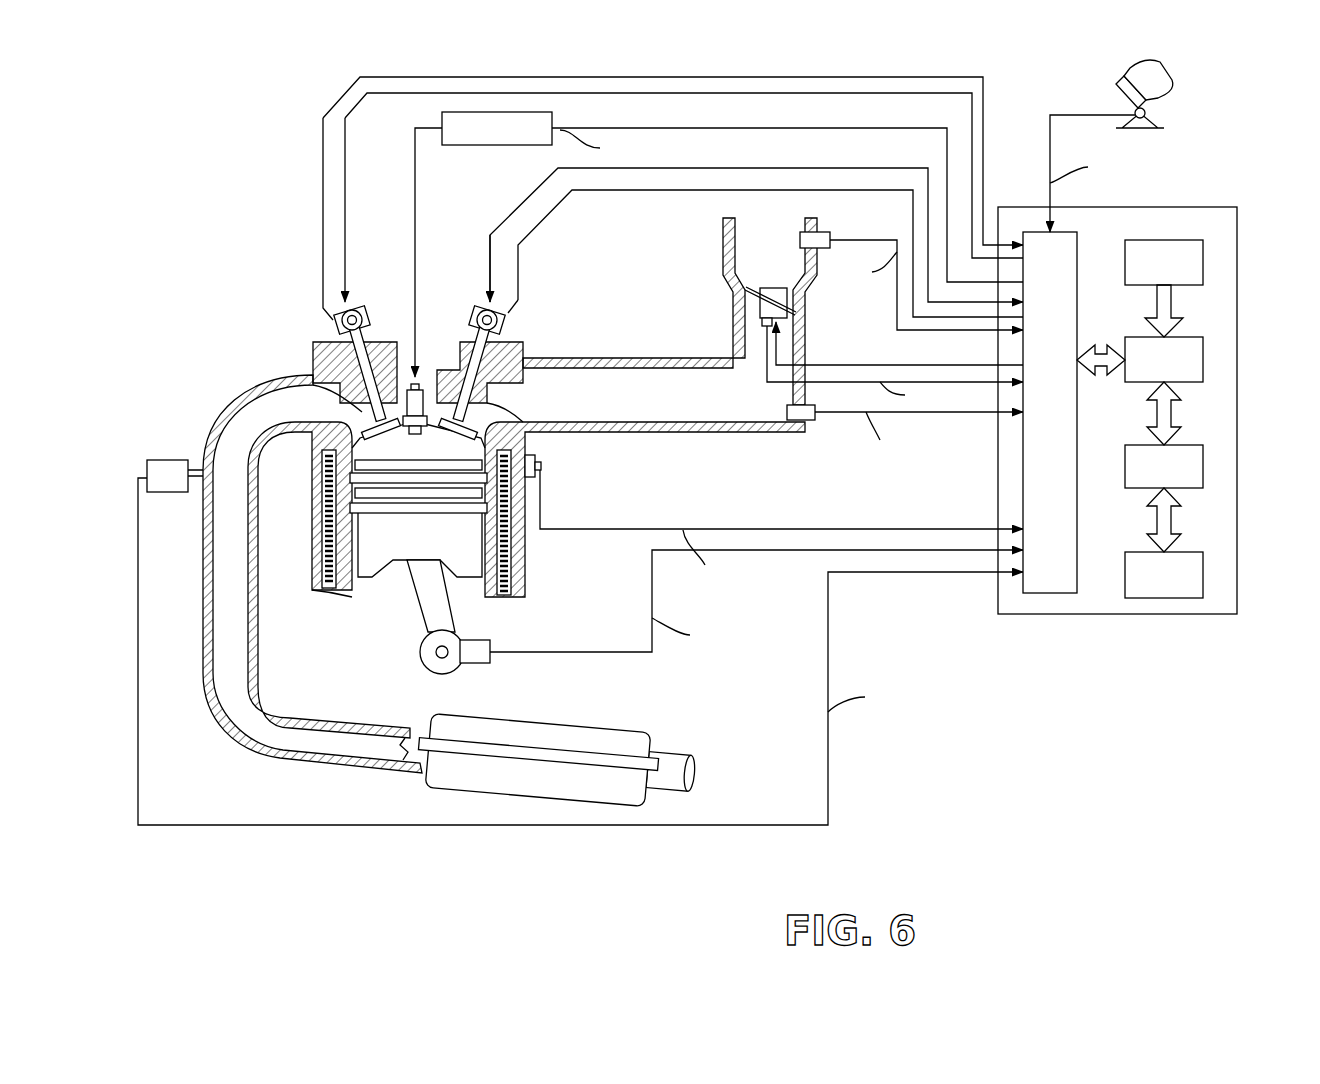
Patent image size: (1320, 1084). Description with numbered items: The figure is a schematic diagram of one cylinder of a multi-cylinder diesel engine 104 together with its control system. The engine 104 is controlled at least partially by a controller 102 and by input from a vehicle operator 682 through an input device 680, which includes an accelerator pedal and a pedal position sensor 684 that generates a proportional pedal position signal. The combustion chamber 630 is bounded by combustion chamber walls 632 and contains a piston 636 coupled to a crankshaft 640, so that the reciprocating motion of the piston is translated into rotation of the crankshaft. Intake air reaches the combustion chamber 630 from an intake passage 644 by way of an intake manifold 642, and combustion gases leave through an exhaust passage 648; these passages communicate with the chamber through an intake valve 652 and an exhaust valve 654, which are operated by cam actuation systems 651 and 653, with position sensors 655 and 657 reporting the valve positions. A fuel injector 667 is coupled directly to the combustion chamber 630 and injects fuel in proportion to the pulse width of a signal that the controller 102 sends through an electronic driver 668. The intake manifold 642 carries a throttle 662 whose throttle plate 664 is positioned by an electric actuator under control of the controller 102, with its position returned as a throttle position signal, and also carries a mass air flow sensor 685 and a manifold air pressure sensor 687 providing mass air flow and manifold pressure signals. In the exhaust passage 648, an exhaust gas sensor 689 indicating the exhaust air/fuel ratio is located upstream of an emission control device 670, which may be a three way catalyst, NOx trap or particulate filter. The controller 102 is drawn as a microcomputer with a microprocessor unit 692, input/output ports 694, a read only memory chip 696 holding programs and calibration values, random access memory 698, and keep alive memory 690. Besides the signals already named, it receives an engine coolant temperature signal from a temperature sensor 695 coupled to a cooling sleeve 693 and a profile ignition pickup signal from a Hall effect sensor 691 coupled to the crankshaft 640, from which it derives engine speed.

The diesel engine 104 is at (240, 312).
The controller 102 is at (1225, 207).
The input/output ports 694 is at (1080, 242).
The read only memory chip 696 is at (1203, 258).
The microprocessor unit 692 is at (1203, 358).
The random access memory 698 is at (1203, 465).
The keep alive memory 690 is at (1203, 572).
The input device 680 is at (1118, 86).
The vehicle operator 682 is at (1170, 75).
The pedal position sensor 684 is at (1152, 118).
The electronic driver 668 is at (520, 145).
The mass air flow sensor 685 is at (830, 236).
The intake manifold 642 is at (781, 311).
The throttle 662 is at (790, 302).
The throttle plate 664 is at (745, 292).
The manifold air pressure sensor 687 is at (812, 422).
The intake passage 644 is at (634, 313).
The cam actuation system 653 is at (362, 300).
The cam actuation system 651 is at (480, 300).
The position sensor 657 is at (333, 322).
The position sensor 655 is at (505, 325).
The fuel injector 667 is at (418, 385).
The exhaust valve 654 is at (335, 395).
The intake valve 652 is at (500, 412).
The exhaust passage 648 is at (312, 574).
The exhaust gas sensor 689 is at (147, 468).
The combustion chamber 630 is at (345, 480).
The combustion chamber walls 632 is at (352, 587).
The piston 636 is at (398, 553).
The crankshaft 640 is at (425, 668).
The Hall effect sensor 691 is at (478, 663).
The cooling sleeve 693 is at (512, 560).
The temperature sensor 695 is at (541, 470).
The emission control device 670 is at (608, 722).